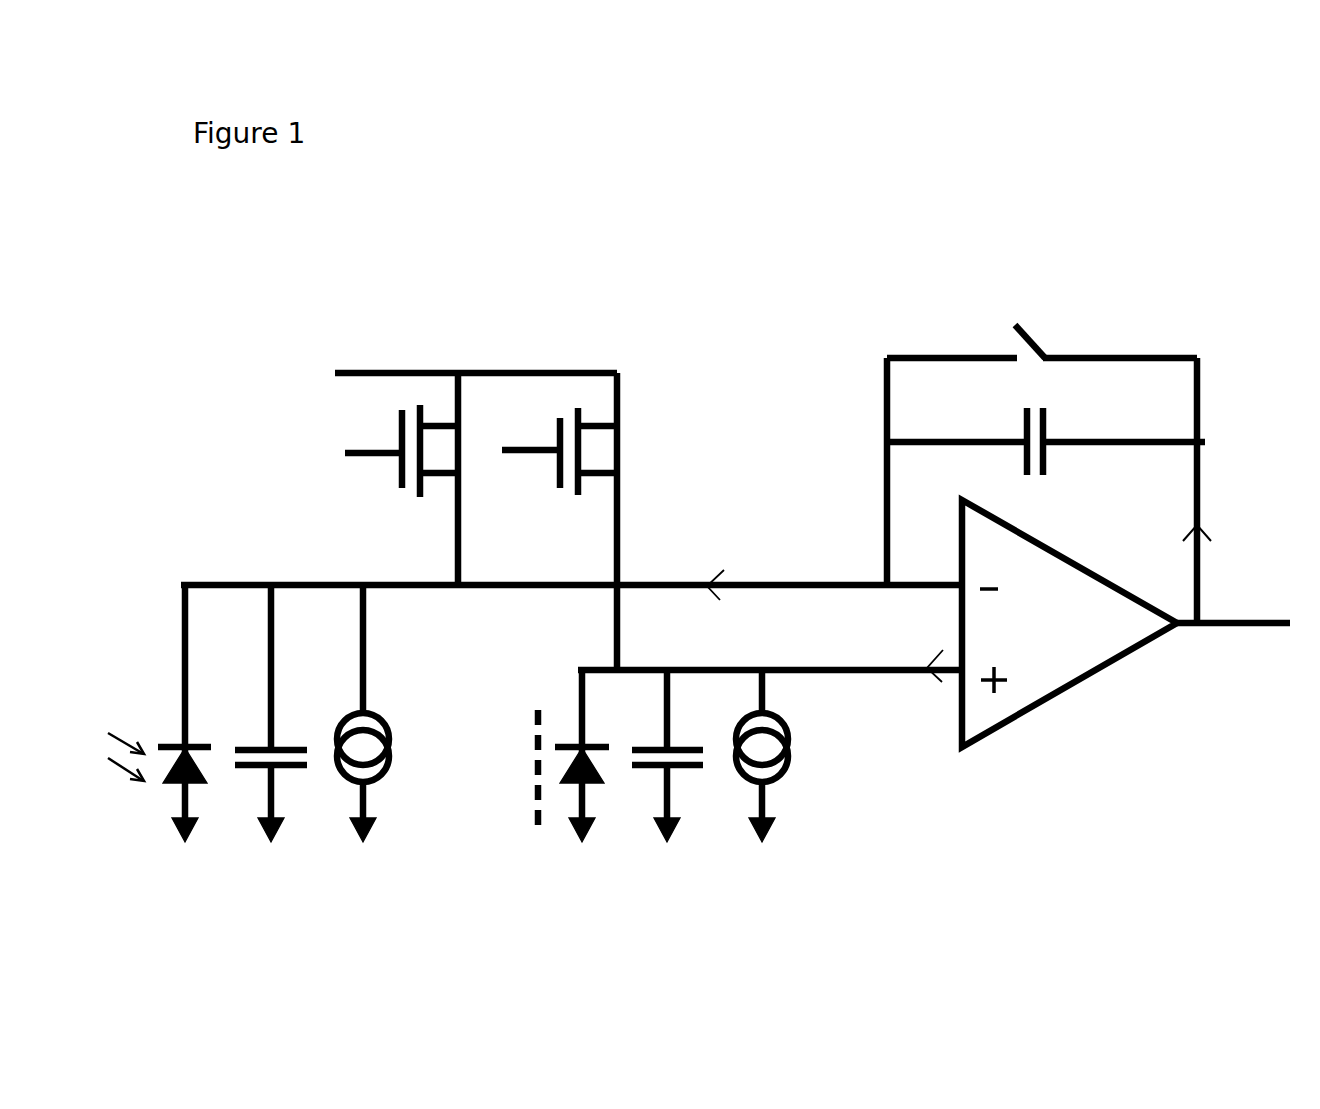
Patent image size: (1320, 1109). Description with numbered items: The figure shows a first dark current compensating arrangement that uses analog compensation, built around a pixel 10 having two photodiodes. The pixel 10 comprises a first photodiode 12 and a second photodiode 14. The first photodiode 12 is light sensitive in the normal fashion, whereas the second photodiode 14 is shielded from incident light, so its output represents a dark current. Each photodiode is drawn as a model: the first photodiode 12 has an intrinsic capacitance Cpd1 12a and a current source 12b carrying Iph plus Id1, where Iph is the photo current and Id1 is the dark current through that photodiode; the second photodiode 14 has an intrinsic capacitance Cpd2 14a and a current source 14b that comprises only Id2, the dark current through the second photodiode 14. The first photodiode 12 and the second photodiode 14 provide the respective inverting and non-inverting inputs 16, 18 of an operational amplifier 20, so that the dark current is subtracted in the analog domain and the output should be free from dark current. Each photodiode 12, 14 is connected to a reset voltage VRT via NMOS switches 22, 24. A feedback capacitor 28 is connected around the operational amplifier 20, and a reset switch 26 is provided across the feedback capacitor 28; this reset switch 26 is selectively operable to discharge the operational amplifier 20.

The pixel 10 is at (228, 322).
The first photodiode 12 is at (205, 745).
The intrinsic capacitance Cpd1 12a is at (296, 740).
The current source 12b is at (368, 715).
The second photodiode 14 is at (562, 692).
The intrinsic capacitance Cpd2 14a is at (700, 825).
The current source 14b is at (807, 810).
The inverting input 16 is at (997, 580).
The non-inverting input 18 is at (1007, 692).
The operational amplifier 20 is at (1095, 670).
The NMOS switch 22 is at (392, 472).
The NMOS switch 24 is at (585, 445).
The reset switch 26 is at (1152, 350).
The feedback capacitor 28 is at (1050, 420).